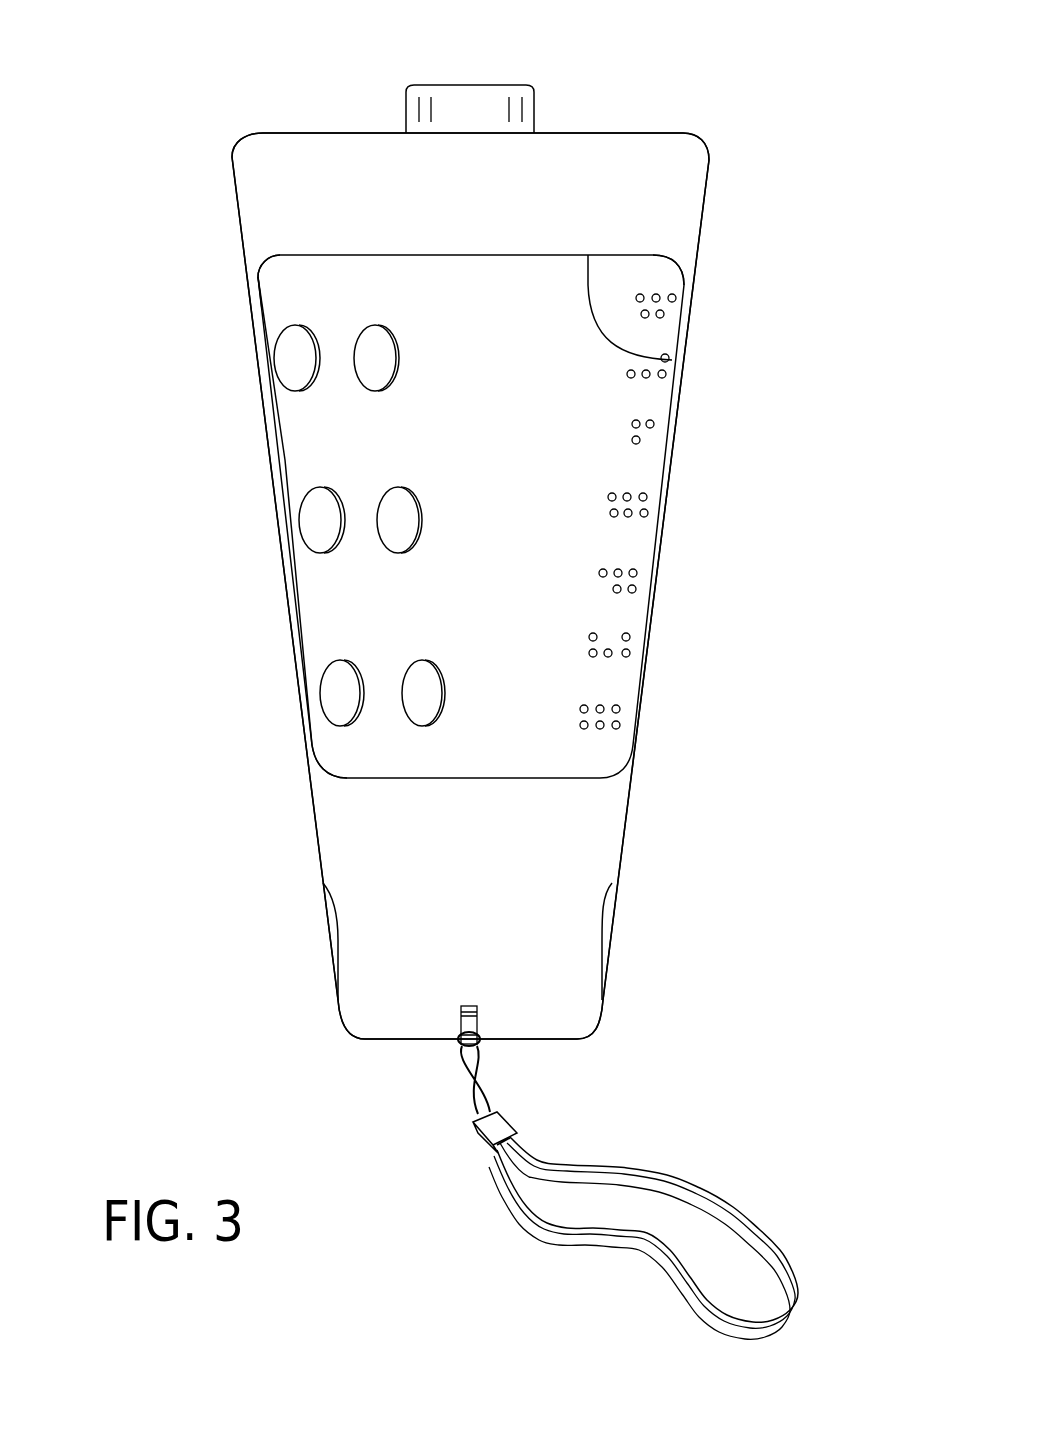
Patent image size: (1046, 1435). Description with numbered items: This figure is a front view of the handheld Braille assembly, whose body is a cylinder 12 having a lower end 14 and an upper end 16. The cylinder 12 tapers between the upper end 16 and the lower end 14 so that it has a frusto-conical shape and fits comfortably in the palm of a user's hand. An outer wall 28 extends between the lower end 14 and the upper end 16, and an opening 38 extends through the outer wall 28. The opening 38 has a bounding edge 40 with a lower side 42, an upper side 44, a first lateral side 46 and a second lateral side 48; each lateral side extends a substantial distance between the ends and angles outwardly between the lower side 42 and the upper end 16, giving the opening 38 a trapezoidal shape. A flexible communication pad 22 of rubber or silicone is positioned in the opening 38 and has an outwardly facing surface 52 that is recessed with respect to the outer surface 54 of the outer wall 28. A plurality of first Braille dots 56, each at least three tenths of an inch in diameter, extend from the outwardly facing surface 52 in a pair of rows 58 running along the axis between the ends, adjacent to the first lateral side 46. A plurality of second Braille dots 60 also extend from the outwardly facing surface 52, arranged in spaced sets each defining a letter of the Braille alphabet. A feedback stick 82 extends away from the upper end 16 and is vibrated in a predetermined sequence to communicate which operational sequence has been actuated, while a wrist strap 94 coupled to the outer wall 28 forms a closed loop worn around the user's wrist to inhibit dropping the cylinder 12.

The cylinder 12 is at (607, 813).
The lower end 14 is at (408, 1040).
The upper end 16 is at (272, 133).
The communication pad 22 is at (330, 605).
The outer wall 28 is at (270, 192).
The opening 38 is at (653, 257).
The bounding edge 40 is at (655, 363).
The lower side 42 is at (378, 775).
The upper side 44 is at (265, 310).
The first lateral side 46 is at (282, 460).
The second lateral side 48 is at (672, 445).
The outwardly facing surface 52 is at (368, 636).
The outer surface 54 is at (563, 904).
The first Braille dots 56 is at (372, 368).
The rows 58 is at (378, 300).
The second Braille dots 60 is at (643, 497).
The feedback stick 82 is at (508, 85).
The wrist strap 94 is at (645, 1168).